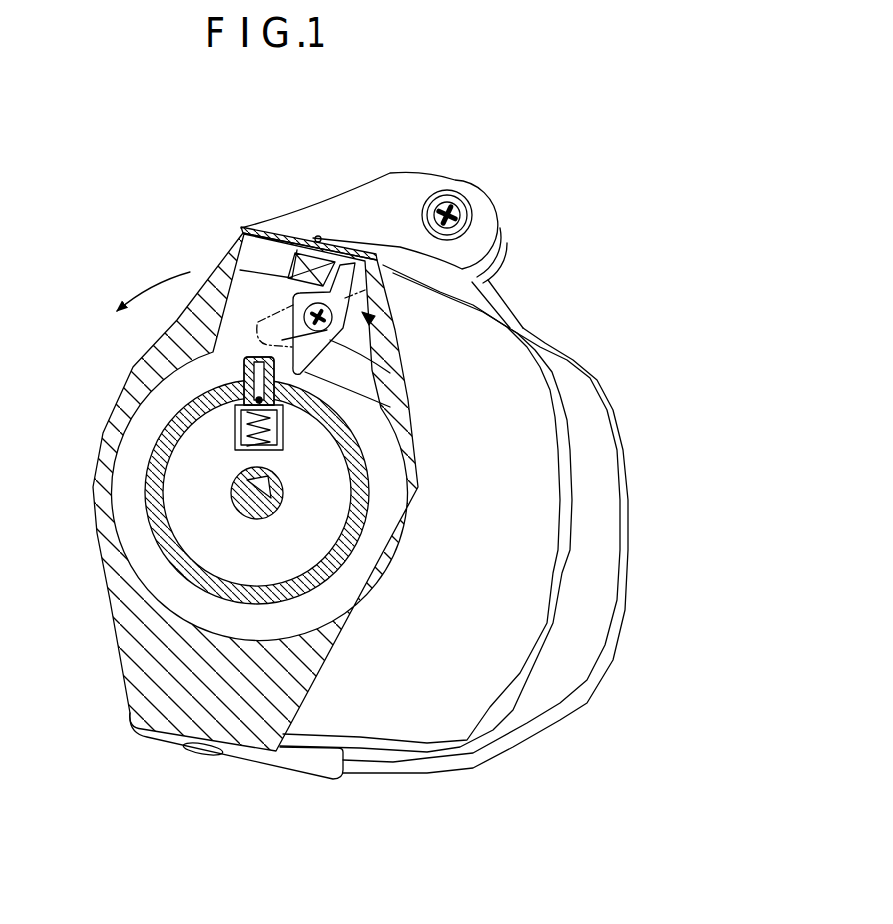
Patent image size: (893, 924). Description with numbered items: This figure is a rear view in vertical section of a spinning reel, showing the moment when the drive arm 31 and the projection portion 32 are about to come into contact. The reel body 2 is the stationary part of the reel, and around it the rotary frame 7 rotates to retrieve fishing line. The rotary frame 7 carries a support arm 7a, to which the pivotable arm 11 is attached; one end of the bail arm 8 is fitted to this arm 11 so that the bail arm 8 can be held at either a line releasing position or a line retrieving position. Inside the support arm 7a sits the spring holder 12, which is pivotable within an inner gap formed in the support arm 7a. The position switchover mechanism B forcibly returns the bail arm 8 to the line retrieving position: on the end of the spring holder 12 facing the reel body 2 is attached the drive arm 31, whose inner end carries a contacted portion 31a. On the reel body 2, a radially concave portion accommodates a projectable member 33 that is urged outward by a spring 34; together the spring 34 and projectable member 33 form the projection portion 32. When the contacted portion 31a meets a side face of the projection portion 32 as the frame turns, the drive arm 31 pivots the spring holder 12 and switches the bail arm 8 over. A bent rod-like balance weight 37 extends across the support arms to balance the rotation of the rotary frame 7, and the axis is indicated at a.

The reel body 2 is at (355, 488).
The rotary frame 7 is at (93, 490).
The support arm 7a is at (240, 228).
The bail arm 8 is at (548, 541).
The arm 11 is at (462, 185).
The spring holder 12 is at (317, 237).
The drive arm 31 is at (345, 340).
The contacted portion 31a is at (383, 403).
The projection portion 32 is at (244, 348).
The projectable member 33 is at (244, 378).
The spring 34 is at (235, 437).
The balance weight 37 is at (517, 733).
The axis a is at (370, 318).
The position switchover mechanism B is at (245, 300).